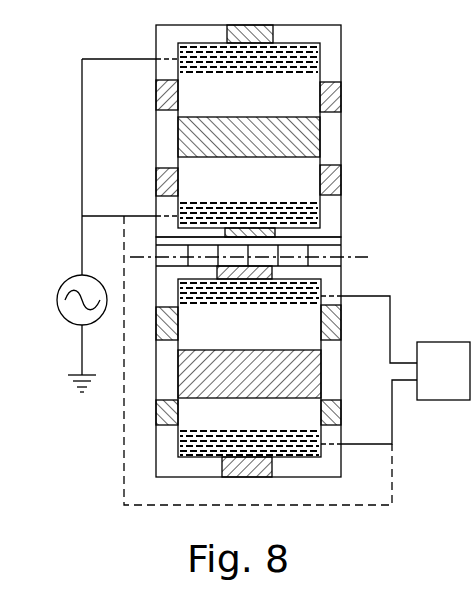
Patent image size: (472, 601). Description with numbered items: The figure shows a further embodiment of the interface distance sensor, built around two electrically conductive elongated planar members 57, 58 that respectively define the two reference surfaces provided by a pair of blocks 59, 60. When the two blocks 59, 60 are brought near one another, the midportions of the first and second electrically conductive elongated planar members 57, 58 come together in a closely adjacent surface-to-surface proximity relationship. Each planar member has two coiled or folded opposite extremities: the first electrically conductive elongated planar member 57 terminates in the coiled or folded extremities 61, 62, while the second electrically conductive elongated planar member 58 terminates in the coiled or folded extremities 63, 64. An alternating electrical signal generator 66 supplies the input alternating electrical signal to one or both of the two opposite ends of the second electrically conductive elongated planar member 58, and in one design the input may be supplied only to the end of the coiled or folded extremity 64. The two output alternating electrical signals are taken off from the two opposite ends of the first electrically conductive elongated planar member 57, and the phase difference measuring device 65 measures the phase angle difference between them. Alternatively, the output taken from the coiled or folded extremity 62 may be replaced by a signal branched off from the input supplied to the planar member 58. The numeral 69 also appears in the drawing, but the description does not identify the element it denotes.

The first electrically conductive elongated planar member 57 is at (205, 378).
The second electrically conductive elongated planar member 58 is at (288, 176).
The block 59 is at (167, 442).
The block 60 is at (330, 127).
The coiled or folded extremity 61 is at (323, 293).
The coiled or folded extremity 62 is at (322, 444).
The coiled or folded extremity 63 is at (157, 205).
The coiled or folded extremity 64 is at (177, 58).
The phase difference measuring device 65 is at (447, 342).
The alternating electrical signal generator 66 is at (62, 287).
The connecting line 69 is at (471, 540).